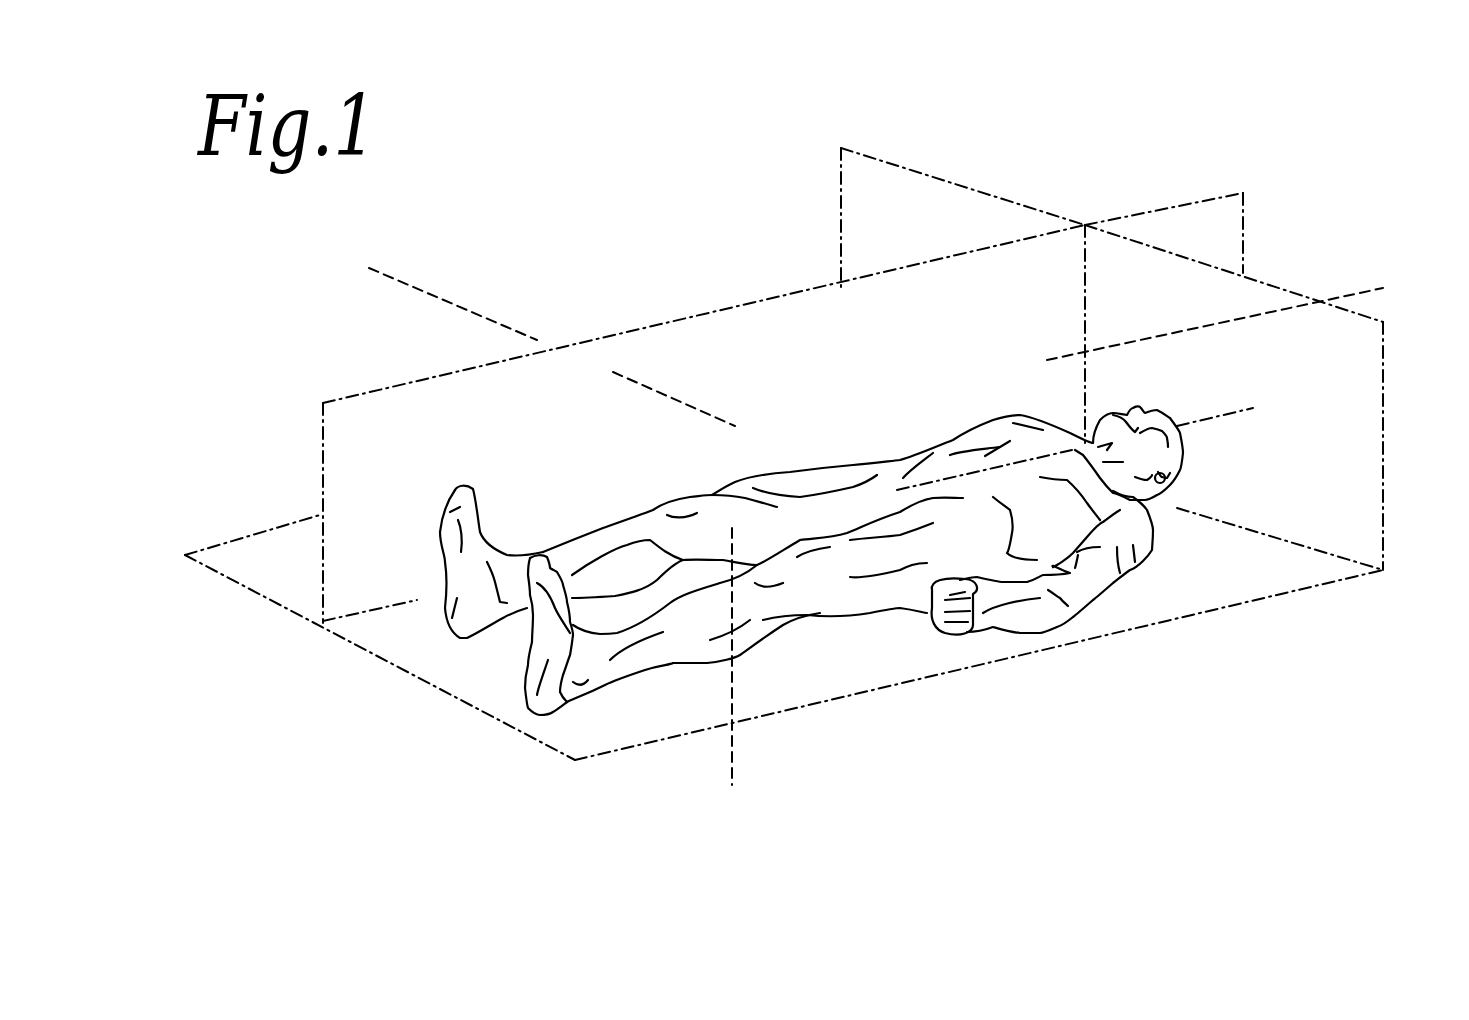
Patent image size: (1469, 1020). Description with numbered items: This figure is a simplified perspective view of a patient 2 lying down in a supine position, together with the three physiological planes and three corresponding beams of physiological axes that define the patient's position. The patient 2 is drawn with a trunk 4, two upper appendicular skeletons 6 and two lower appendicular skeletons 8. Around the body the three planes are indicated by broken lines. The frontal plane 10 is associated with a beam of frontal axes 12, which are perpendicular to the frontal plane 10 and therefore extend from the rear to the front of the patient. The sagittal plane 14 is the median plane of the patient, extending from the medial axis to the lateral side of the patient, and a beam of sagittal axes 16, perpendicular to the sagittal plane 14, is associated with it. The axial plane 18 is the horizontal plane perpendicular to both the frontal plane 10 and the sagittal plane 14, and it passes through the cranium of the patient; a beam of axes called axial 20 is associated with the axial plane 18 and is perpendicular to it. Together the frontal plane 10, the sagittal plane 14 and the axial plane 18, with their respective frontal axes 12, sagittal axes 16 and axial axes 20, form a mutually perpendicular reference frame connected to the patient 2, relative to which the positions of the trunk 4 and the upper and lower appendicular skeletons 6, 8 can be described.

The patient 2 is at (903, 613).
The trunk 4 is at (1022, 490).
The upper appendicular skeletons 6 is at (1093, 570).
The lower appendicular skeletons 8 is at (670, 648).
The frontal plane 10 is at (257, 553).
The frontal axes 12 is at (733, 763).
The sagittal plane 14 is at (662, 360).
The sagittal axes 16 is at (403, 283).
The axial plane 18 is at (932, 195).
The axial axes 20 is at (1355, 292).